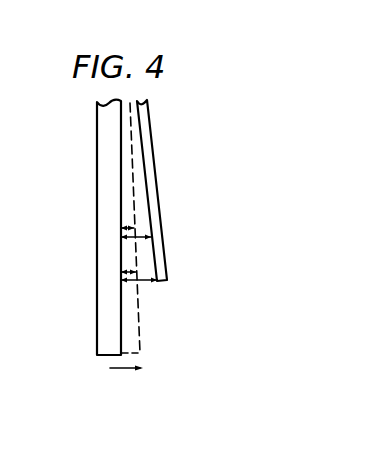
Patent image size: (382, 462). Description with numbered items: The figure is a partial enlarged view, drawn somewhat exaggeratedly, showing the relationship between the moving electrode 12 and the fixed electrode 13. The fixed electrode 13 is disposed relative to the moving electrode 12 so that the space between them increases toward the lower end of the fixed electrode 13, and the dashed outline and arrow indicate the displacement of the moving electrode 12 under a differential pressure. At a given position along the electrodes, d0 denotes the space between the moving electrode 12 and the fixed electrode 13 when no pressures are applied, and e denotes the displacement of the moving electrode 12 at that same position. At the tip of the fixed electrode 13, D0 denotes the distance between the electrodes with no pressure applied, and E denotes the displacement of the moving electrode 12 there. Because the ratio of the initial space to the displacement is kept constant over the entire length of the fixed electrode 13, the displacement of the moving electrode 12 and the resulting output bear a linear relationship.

The moving electrode 12 is at (107, 320).
The fixed electrode 13 is at (152, 169).
The displacement of the moving electrode at a given position e is at (133, 227).
The space between the electrodes at a given position d0 is at (138, 238).
The displacement of the moving electrode at the tip position E is at (122, 271).
The distance between the electrodes at the tip D0 is at (140, 281).